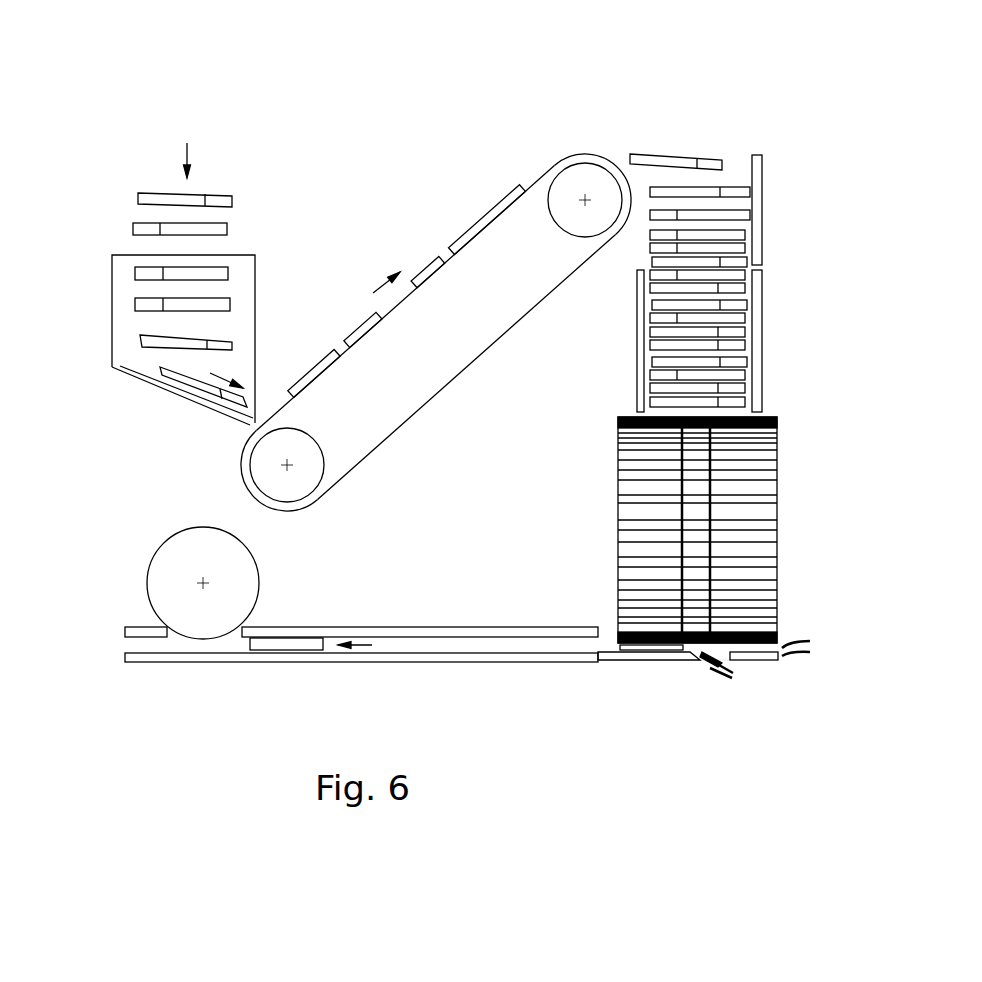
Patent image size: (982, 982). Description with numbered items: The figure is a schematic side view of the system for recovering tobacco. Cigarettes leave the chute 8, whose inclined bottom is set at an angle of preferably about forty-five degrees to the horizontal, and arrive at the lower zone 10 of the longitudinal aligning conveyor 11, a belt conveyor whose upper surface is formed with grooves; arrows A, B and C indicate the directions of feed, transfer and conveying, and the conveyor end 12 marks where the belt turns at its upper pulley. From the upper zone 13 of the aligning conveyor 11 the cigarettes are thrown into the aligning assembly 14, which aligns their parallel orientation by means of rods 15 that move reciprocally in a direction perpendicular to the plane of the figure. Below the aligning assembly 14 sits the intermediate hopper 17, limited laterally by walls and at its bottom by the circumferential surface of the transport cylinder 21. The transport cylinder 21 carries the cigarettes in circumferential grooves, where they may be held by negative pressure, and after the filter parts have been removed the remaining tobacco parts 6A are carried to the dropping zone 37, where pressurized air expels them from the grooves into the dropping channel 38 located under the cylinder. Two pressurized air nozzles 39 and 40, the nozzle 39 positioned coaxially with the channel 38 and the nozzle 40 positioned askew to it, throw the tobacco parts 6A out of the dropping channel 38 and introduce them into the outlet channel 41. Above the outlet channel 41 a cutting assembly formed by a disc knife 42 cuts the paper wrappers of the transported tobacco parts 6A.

The chute 8 is at (113, 257).
The feed direction arrow A is at (190, 150).
The transfer direction arrow B is at (220, 375).
The conveying direction arrow C is at (385, 277).
The lower zone 10 is at (212, 447).
The aligning conveyor 11 is at (447, 418).
The conveyor upper end 12 is at (530, 167).
The upper zone 13 is at (590, 128).
The aligning assembly 14 is at (745, 147).
The rods 15 is at (690, 167).
The intermediate hopper 17 is at (617, 350).
The transport cylinder 21 is at (617, 520).
The dropping zone 37 is at (655, 685).
The dropping channel 38 is at (740, 655).
The pressurized air nozzle 39 is at (800, 655).
The pressurized air nozzle 40 is at (715, 667).
The outlet channel 41 is at (470, 662).
The disc knife 42 is at (172, 575).
The tobacco parts 6A is at (300, 650).